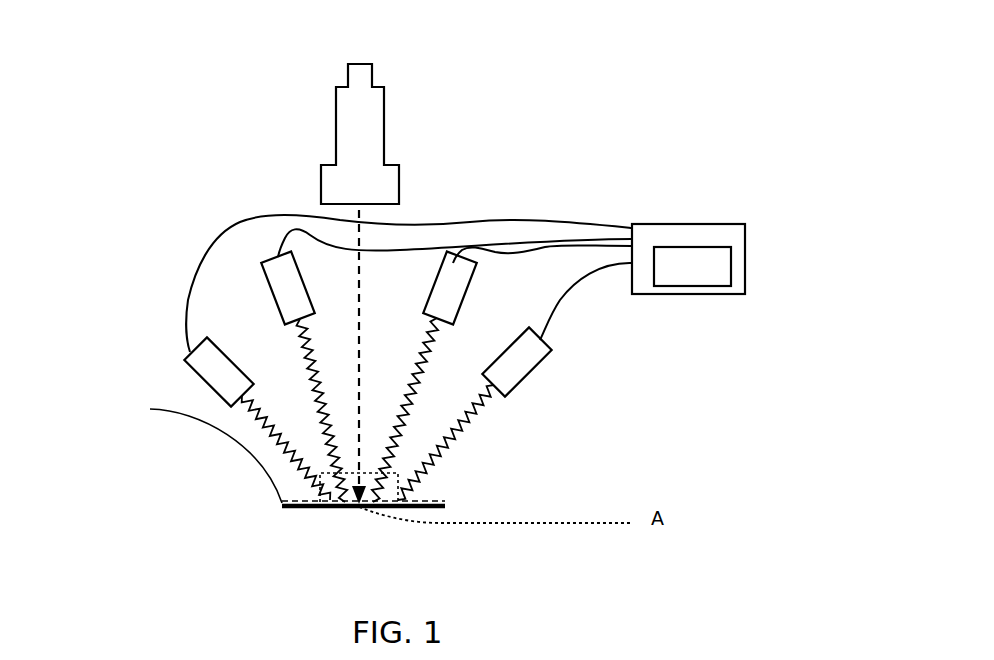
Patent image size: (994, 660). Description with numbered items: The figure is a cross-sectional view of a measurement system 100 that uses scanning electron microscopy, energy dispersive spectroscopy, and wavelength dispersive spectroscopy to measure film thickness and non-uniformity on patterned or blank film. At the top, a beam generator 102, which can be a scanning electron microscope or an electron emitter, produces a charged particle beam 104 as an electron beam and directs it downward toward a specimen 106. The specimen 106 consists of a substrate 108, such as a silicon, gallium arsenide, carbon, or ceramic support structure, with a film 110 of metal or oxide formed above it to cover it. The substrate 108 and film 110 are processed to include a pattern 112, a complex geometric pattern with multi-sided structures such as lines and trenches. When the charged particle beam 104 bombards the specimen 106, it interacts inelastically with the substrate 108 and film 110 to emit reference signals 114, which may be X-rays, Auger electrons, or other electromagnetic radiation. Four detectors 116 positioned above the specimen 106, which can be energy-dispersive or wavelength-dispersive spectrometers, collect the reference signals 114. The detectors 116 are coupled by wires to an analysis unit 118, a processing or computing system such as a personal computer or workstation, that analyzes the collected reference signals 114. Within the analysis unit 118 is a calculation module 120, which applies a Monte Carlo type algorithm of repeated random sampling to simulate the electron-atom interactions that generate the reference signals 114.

The measurement system 100 is at (120, 38).
The beam generator 102 is at (348, 176).
The charged particle beam 104 is at (334, 266).
The specimen 106 is at (198, 506).
The substrate 108 is at (150, 409).
The film 110 is at (437, 501).
The pattern 112 is at (458, 505).
The reference signals 114 is at (505, 418).
The detectors 116 is at (522, 335).
The analysis unit 118 is at (722, 233).
The calculation module 120 is at (722, 265).